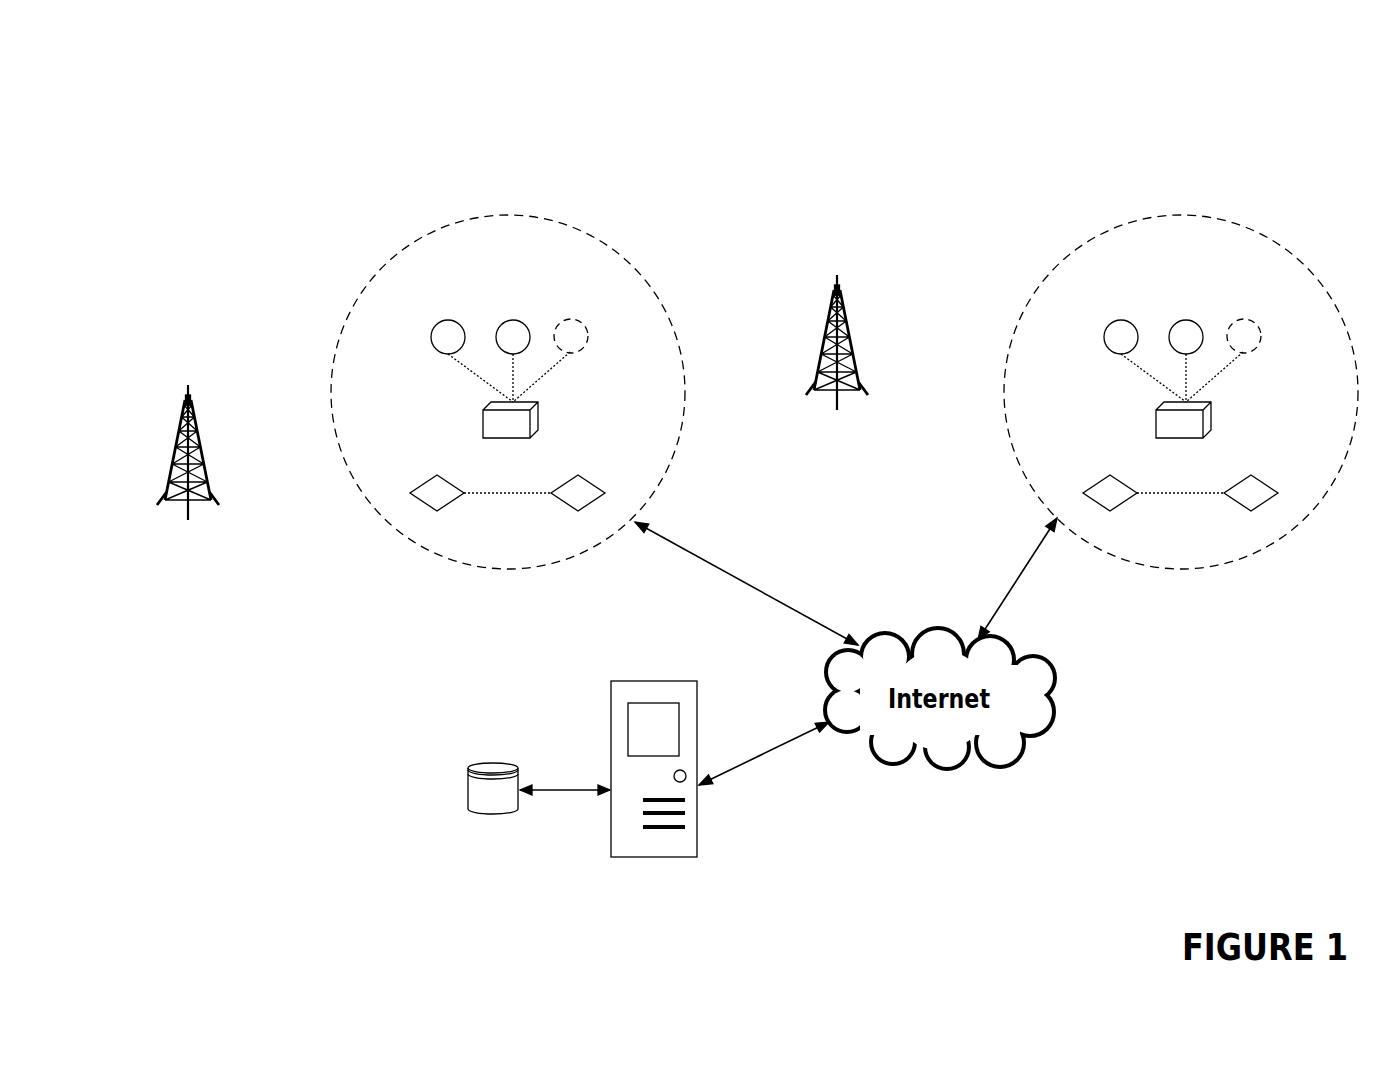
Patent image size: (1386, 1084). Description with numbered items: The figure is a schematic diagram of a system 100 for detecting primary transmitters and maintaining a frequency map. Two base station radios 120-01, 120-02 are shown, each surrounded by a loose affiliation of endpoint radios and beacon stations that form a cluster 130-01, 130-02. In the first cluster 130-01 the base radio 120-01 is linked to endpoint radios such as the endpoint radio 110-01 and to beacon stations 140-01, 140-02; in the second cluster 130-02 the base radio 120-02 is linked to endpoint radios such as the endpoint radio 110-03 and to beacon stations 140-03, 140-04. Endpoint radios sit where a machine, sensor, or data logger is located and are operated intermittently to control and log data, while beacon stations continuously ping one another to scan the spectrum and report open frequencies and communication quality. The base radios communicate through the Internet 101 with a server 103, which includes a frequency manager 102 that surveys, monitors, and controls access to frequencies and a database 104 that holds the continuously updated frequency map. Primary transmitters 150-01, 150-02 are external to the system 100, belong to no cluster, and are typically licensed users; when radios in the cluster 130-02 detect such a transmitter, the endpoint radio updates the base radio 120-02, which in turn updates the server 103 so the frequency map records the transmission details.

The system 100 is at (722, 113).
The Internet 101 is at (738, 580).
The frequency manager 102 is at (628, 732).
The server 103 is at (695, 858).
The database 104 is at (502, 823).
The endpoint radio 110-01 is at (432, 326).
The endpoint radio 110-03 is at (1105, 326).
The base station radio 120-01 is at (537, 418).
The base station radio 120-02 is at (1210, 418).
The cluster 130-01 is at (363, 300).
The cluster 130-02 is at (1036, 300).
The beacon station 140-01 is at (428, 482).
The beacon station 140-02 is at (550, 494).
The beacon station 140-03 is at (1101, 482).
The beacon station 140-04 is at (1223, 494).
The primary transmitter 150-01 is at (170, 405).
The primary transmitter 150-02 is at (820, 345).